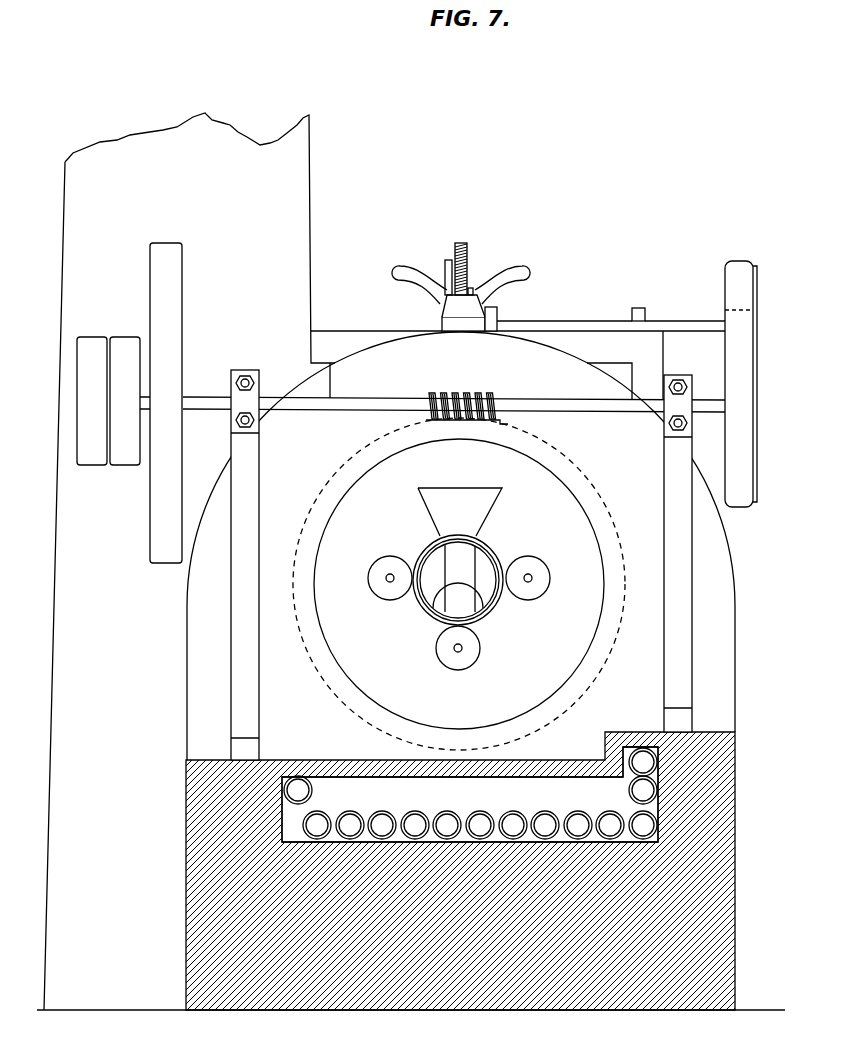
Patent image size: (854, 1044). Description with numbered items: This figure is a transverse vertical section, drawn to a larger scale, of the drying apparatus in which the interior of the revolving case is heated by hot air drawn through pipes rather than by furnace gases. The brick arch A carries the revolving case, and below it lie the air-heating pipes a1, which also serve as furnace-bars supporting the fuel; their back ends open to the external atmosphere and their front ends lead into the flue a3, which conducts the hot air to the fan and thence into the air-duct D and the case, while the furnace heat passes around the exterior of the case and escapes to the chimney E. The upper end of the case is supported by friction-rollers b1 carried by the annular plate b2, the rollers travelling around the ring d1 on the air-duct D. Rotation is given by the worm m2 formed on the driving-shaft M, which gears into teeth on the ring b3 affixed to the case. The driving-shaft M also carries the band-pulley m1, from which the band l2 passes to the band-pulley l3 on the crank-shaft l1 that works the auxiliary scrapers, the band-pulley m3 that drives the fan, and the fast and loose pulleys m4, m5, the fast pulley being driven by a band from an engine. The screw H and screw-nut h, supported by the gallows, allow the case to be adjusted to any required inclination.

The chimney E is at (189, 561).
The fast pulley m4 is at (92, 392).
The loose pulley m5 is at (125, 393).
The band-pulley m3 is at (166, 403).
The screw H is at (461, 264).
The screw-nut h is at (469, 295).
The crank-shaft l1 is at (566, 318).
The band l2 is at (739, 384).
The band-pulley l3 is at (760, 288).
The band-pulley m1 is at (757, 408).
The worm m2 is at (470, 393).
The driving-shaft M is at (531, 412).
The toothed ring b3 is at (467, 429).
The brick arch A is at (461, 546).
The ring d1 is at (493, 552).
The air-duct D is at (458, 580).
The friction-rollers b1 is at (459, 613).
The annular plate b2 is at (459, 584).
The air-heating pipes a1 is at (374, 811).
The flue a3 is at (470, 794).